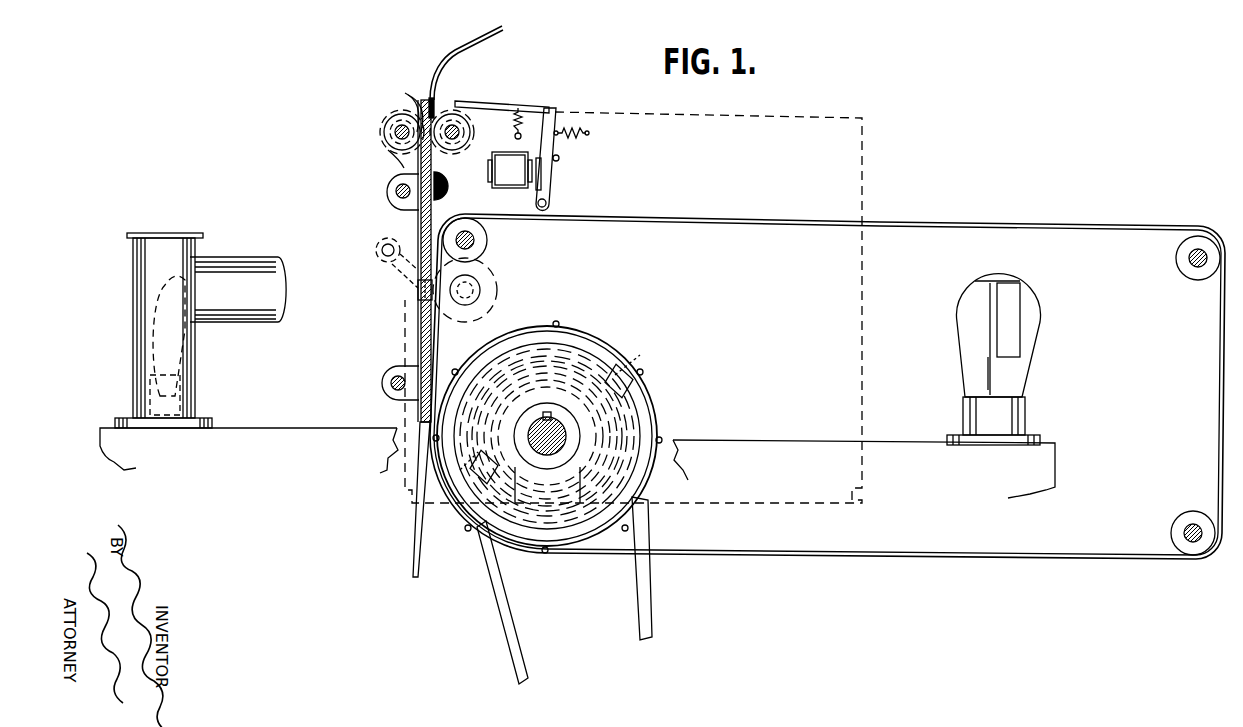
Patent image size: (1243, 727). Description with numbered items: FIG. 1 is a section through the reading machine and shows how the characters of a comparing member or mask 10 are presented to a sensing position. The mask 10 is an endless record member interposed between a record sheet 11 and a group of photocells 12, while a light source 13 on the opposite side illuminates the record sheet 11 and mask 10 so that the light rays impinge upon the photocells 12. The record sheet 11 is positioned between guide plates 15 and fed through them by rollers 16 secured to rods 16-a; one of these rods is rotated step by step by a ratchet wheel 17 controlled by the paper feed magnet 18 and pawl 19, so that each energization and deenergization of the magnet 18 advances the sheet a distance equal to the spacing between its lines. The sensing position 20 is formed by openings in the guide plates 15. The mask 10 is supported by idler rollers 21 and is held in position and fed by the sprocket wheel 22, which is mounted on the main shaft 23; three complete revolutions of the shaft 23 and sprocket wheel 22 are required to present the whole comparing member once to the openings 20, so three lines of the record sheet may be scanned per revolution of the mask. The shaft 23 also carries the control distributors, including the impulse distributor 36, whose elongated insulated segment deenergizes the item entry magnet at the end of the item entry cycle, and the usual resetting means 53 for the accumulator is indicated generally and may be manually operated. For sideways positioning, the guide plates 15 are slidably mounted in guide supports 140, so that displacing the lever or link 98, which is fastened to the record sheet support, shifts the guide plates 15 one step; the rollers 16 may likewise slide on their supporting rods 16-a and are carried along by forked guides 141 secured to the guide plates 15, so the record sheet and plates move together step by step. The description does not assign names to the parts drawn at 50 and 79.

The comparing member or mask 10 is at (706, 224).
The record sheet 11 is at (470, 44).
The photocells 12 is at (975, 275).
The light source 13 is at (192, 262).
The guide plates 15 is at (445, 216).
The rollers 16 is at (384, 126).
The rods 16-a is at (407, 104).
The ratchet wheel 17 is at (442, 103).
The paper feed magnet 18 is at (506, 176).
The pawl 19 is at (510, 104).
The sensing position 20 is at (420, 293).
The idler rollers 21 is at (488, 240).
The sprocket wheel 22 is at (597, 331).
The main shaft 23 is at (560, 434).
The impulse distributor 36 is at (547, 436).
The gear 50 is at (500, 288).
The resetting means 53 is at (384, 262).
The ring 79 is at (562, 384).
The link 98 is at (442, 182).
The guide supports 140 is at (390, 190).
The forked guides 141 is at (400, 162).